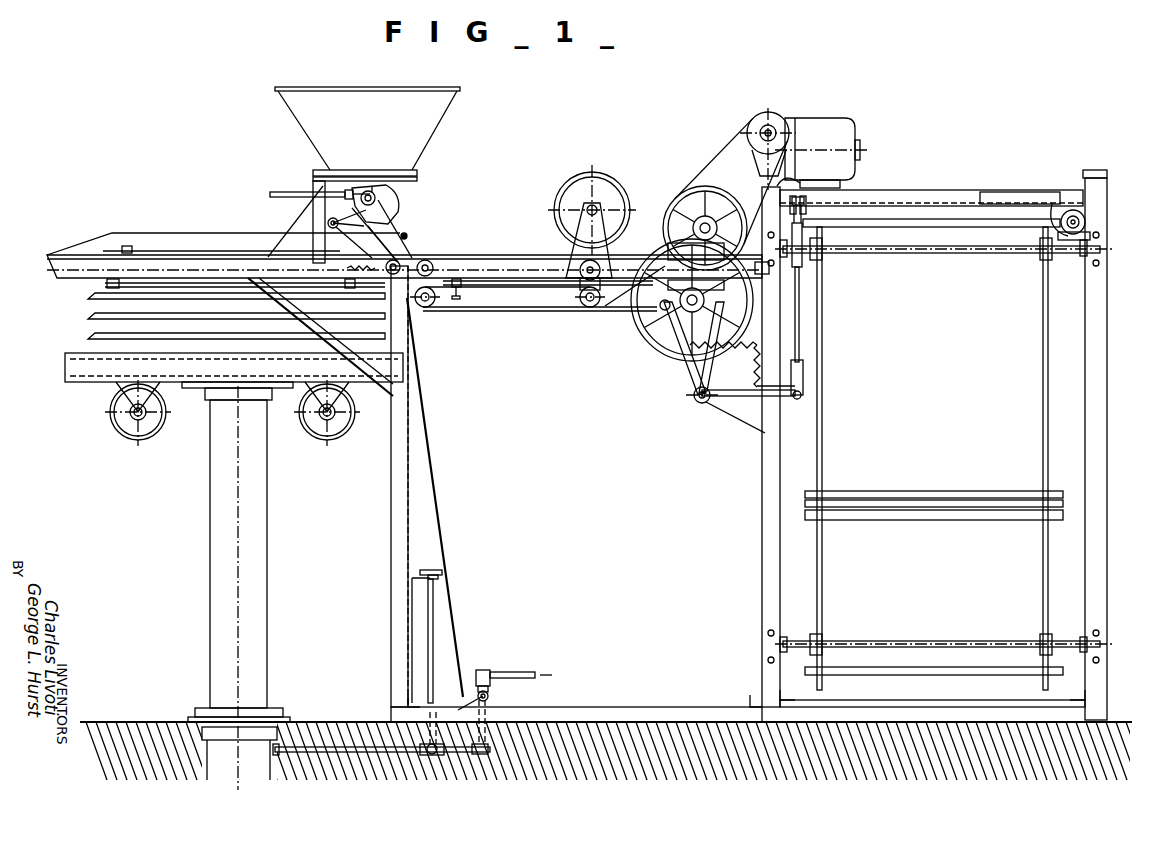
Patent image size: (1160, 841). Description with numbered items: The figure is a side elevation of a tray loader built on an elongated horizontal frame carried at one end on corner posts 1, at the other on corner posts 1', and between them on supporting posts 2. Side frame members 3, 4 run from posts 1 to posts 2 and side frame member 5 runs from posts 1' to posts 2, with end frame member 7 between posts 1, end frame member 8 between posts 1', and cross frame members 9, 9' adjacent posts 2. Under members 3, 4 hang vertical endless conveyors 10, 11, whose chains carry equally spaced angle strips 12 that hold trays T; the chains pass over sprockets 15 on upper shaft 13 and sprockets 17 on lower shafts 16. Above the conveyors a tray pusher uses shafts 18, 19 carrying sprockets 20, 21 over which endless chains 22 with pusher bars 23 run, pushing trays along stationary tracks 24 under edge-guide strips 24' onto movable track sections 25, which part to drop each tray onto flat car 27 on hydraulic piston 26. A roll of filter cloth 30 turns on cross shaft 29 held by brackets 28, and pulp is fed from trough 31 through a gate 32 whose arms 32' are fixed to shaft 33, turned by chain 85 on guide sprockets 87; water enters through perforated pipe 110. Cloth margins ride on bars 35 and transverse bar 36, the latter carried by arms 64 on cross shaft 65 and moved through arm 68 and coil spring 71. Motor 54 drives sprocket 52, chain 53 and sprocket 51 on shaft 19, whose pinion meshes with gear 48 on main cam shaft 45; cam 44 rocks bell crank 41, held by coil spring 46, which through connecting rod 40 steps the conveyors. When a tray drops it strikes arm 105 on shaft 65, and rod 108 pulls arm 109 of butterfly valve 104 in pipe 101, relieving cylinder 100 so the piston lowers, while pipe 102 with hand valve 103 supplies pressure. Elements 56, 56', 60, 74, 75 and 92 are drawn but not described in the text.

The corner posts 1 is at (954, 445).
The corner posts 1' is at (556, 494).
The supporting posts 2 is at (762, 523).
The side frame member 3 is at (905, 190).
The side frame member 4 is at (1000, 192).
The side frame member 5 is at (490, 266).
The end frame member 7 is at (1080, 190).
The end frame member 8 is at (447, 256).
The cross frame member 9 is at (795, 185).
The cross frame member 9' is at (765, 284).
The endless conveyor 10 is at (822, 425).
The endless conveyor 11 is at (1043, 425).
The angle strips 12 is at (957, 496).
The shaft 13 is at (930, 252).
The sprockets 15 is at (822, 252).
The shafts 16 is at (943, 641).
The sprockets 17 is at (823, 640).
The shaft 18 is at (1088, 224).
The shaft 19 is at (692, 225).
The sprockets 20 is at (1064, 252).
The sprockets 21 is at (680, 249).
The endless chains 22 is at (748, 211).
The pusher bars 23 is at (1060, 206).
The tracks 24 is at (404, 247).
The stationary strips 24' is at (477, 236).
The track sections 25 is at (178, 252).
The piston 26 is at (211, 565).
The flat car 27 is at (80, 383).
The brackets 28 is at (578, 224).
The cross shaft 29 is at (582, 206).
The roll of filter cloth 30 is at (580, 176).
The trough 31 is at (409, 163).
The gate 32 is at (392, 202).
The arms 32' is at (387, 168).
The shaft 33 is at (365, 190).
The bars 35 is at (140, 250).
The transverse bar 36 is at (406, 236).
The connecting rod 40 is at (804, 335).
The bell crank 41 is at (714, 409).
The cam 44 is at (641, 320).
The main cam shaft 45 is at (699, 292).
The coil spring 46 is at (757, 369).
The gear 48 is at (641, 331).
The sprocket 51 is at (678, 200).
The drive sprocket 52 is at (774, 116).
The chain 53 is at (704, 180).
The motor 54 is at (820, 118).
The rail 56 is at (245, 245).
The rail 56' is at (522, 298).
The guide block 60 is at (466, 296).
The arms 64 is at (427, 259).
The cross shaft 65 is at (386, 296).
The arm 68 is at (686, 369).
The coil spring 71 is at (725, 364).
The linkage 74 is at (328, 222).
The post 75 is at (313, 228).
The endless chain 85 is at (517, 312).
The guide sprockets 87 is at (433, 306).
The pivot 92 is at (694, 398).
The cylinder 100 is at (215, 742).
The pipe 101 is at (342, 746).
The pipe 102 is at (437, 758).
The hand controlled valve 103 is at (426, 759).
The butterfly valve 104 is at (494, 693).
The arm 105 is at (343, 268).
The rod 108 is at (441, 483).
The arm 109 is at (470, 672).
The pipe 110 is at (297, 191).
The trays T is at (90, 336).